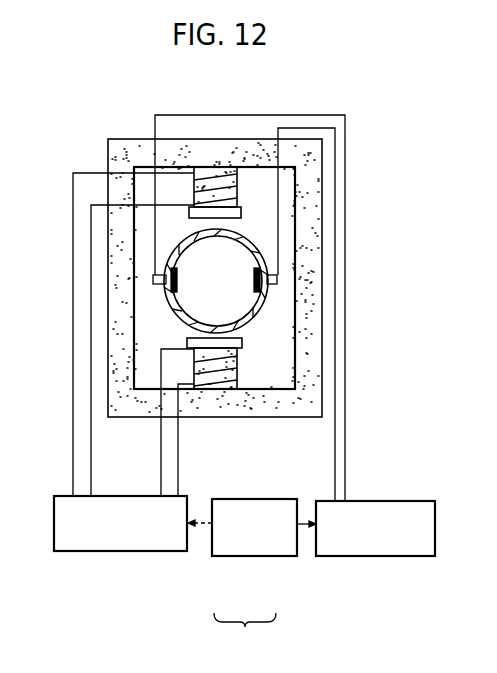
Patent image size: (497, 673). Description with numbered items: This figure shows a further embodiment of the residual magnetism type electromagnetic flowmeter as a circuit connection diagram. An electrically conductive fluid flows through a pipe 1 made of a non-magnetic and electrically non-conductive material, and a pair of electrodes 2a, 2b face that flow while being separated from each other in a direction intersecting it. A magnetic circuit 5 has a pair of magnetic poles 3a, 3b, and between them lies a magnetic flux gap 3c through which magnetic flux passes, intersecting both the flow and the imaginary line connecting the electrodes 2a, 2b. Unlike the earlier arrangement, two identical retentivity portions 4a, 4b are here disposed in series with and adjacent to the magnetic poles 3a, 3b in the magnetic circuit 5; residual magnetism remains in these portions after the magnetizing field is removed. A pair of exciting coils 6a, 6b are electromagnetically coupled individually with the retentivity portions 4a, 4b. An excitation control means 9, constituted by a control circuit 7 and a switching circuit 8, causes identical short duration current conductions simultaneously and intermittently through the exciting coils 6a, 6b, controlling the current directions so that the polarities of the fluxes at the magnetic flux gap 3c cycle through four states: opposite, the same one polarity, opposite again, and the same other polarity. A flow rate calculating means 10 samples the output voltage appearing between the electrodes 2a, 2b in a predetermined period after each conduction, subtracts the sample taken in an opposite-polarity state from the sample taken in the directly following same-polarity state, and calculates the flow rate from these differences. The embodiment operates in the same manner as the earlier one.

The pipe 1 is at (267, 255).
The electrode 2a is at (172, 293).
The electrode 2b is at (256, 272).
The magnetic pole 3a is at (222, 218).
The magnetic pole 3b is at (232, 336).
The magnetic flux gap 3c is at (219, 289).
The retentivity portion 4a is at (236, 175).
The retentivity portion 4b is at (237, 378).
The magnetic circuit 5 is at (307, 168).
The exciting coil 6a is at (194, 186).
The exciting coil 6b is at (194, 372).
The control circuit 7 is at (270, 557).
The switching circuit 8 is at (177, 552).
The excitation control means 9 is at (238, 656).
The flow rate calculating means 10 is at (337, 557).